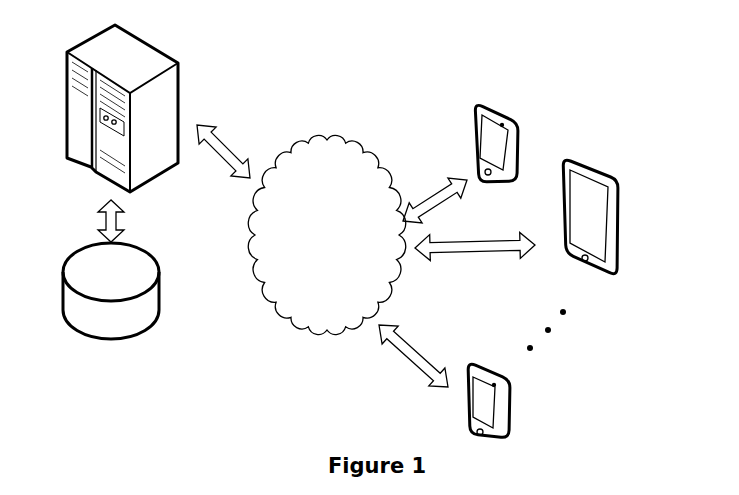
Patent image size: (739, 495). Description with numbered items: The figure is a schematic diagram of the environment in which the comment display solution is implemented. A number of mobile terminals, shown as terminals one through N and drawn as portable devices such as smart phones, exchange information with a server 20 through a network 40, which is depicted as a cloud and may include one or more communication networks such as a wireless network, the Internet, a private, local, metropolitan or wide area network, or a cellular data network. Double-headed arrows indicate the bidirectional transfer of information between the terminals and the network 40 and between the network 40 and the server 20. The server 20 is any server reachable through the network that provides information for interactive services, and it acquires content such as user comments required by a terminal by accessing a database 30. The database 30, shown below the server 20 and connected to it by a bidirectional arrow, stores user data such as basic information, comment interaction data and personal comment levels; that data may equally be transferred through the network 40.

The server 20 is at (162, 50).
The database 30 is at (155, 258).
The network 40 is at (326, 235).